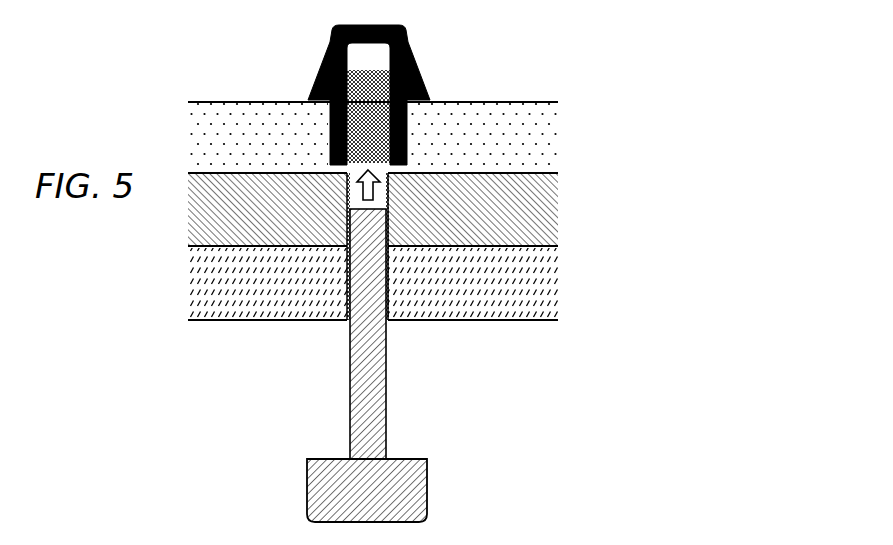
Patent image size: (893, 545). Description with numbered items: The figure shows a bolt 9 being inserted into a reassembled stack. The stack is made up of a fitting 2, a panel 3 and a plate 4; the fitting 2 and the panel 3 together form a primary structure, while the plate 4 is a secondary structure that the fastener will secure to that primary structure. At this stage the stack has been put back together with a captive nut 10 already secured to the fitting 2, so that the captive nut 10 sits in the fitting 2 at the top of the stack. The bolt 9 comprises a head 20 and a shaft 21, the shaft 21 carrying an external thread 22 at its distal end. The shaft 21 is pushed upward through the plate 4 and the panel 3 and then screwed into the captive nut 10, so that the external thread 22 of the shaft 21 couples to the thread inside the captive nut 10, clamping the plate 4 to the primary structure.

The fitting 2 is at (235, 143).
The panel 3 is at (235, 212).
The plate 4 is at (235, 285).
The bolt 9 is at (338, 347).
The captive nut 10 is at (303, 62).
The head 20 is at (427, 490).
The shaft 21 is at (385, 432).
The external thread 22 is at (388, 267).